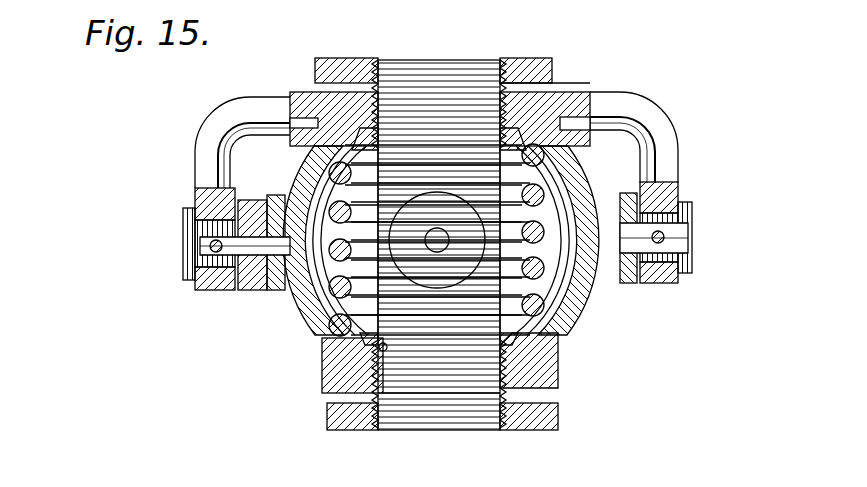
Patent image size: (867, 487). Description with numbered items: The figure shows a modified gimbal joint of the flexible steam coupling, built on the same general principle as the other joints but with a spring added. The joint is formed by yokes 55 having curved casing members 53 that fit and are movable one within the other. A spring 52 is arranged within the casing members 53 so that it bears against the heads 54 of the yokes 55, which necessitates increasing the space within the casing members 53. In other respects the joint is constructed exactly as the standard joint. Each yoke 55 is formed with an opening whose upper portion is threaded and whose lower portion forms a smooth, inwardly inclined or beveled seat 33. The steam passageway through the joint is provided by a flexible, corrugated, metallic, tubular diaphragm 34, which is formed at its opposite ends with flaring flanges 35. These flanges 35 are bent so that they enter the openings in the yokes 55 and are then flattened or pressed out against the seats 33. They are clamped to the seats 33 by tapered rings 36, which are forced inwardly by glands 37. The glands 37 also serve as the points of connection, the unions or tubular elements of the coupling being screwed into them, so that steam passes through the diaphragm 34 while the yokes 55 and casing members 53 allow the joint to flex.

The beveled seat 33 is at (545, 112).
The corrugated tubular diaphragm 34 is at (350, 275).
The flaring flange 35 is at (388, 133).
The tapered ring 36 is at (510, 100).
The gland 37 is at (500, 58).
The spring 52 is at (560, 118).
The casing member 53 is at (598, 160).
The head 54 is at (332, 120).
The yoke 55 is at (217, 147).